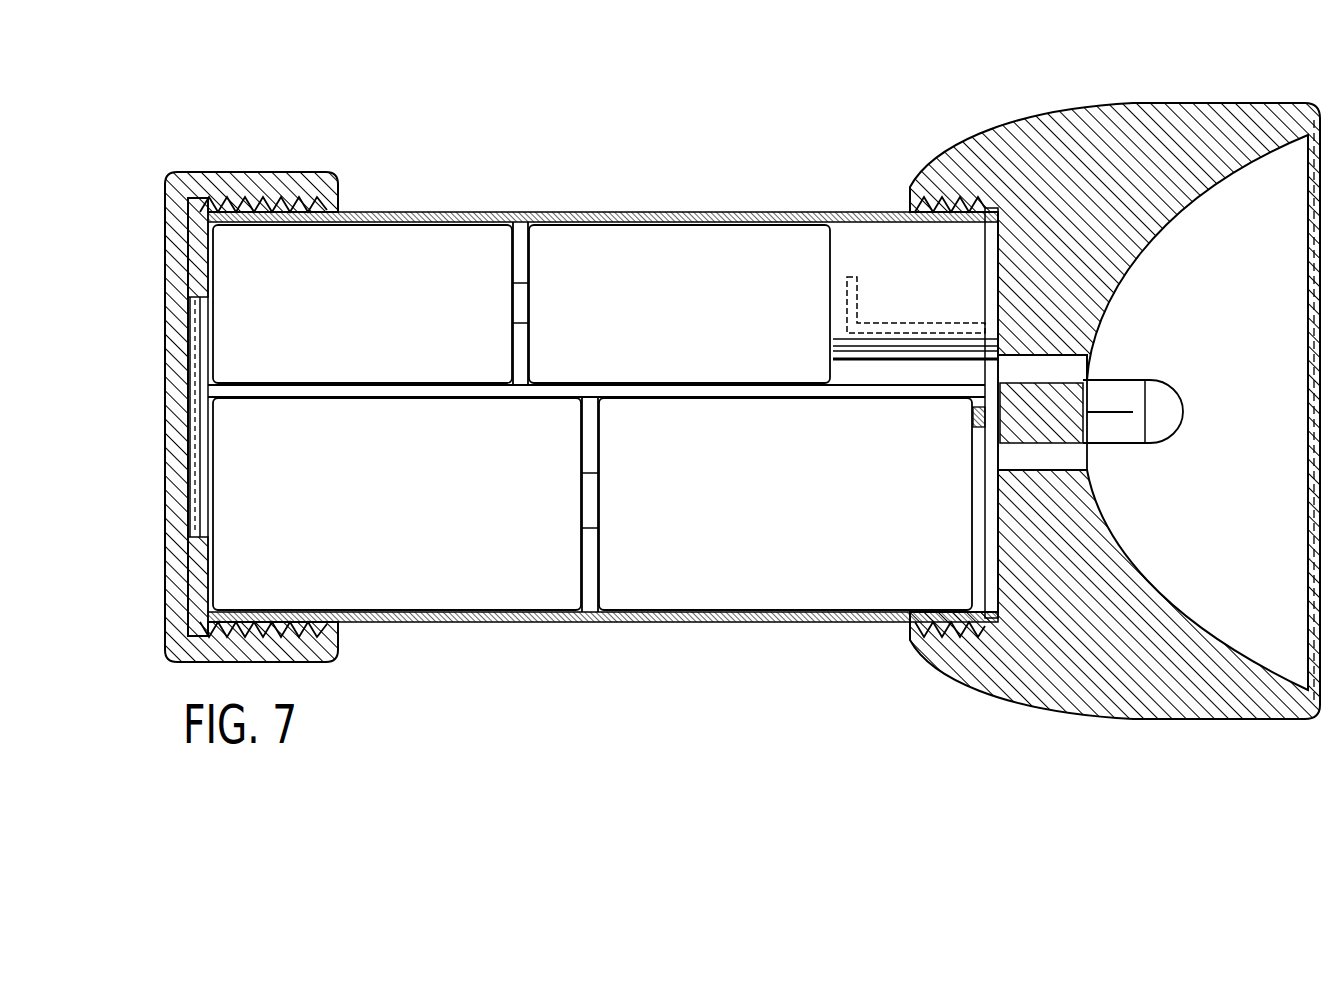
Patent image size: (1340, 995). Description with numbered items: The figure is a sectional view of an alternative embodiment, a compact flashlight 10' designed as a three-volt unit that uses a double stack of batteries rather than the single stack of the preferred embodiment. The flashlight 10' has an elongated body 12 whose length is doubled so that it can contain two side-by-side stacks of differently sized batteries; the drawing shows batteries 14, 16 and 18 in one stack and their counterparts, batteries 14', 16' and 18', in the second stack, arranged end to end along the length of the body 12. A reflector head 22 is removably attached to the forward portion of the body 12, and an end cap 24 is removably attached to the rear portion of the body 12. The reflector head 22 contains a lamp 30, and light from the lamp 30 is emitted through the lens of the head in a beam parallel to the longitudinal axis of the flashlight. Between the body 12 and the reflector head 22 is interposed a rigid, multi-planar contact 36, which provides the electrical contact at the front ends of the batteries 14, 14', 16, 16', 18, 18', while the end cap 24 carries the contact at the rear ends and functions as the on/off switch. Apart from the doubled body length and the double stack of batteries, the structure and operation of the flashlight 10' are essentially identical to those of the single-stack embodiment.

The flashlight 10' is at (637, 89).
The elongated body 12 is at (714, 202).
The battery 14 is at (399, 433).
The battery 14' is at (787, 446).
The battery 16 is at (362, 304).
The battery 16' is at (679, 304).
The battery 18 is at (397, 504).
The battery 18' is at (792, 504).
The reflector head 22 is at (1095, 98).
The end cap 24 is at (249, 158).
The lamp 30 is at (1178, 402).
The multi-planar contact 36 is at (1010, 372).